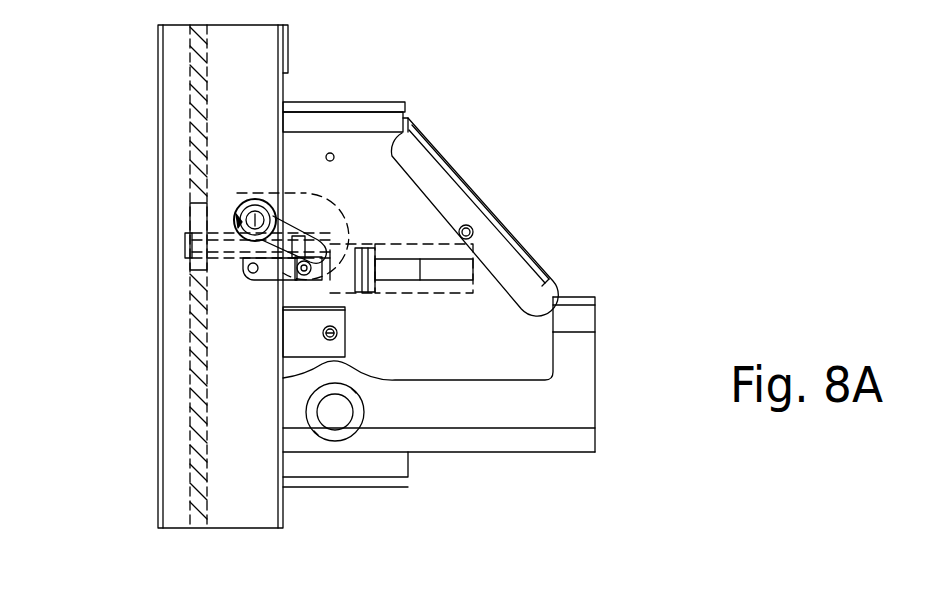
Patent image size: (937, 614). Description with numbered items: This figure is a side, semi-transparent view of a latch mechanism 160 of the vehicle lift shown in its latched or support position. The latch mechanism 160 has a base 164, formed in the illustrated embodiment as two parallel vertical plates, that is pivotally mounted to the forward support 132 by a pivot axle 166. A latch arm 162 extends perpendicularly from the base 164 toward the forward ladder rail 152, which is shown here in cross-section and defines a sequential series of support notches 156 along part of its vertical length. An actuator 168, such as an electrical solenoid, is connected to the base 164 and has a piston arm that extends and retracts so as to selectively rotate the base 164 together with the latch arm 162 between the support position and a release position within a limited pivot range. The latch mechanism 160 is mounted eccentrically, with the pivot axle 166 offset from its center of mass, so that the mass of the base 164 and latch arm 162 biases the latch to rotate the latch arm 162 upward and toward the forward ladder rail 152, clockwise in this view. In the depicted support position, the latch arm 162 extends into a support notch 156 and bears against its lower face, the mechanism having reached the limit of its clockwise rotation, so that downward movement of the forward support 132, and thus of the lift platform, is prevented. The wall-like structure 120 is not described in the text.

The wall 120 is at (173, 450).
The forward ladder rail 152 is at (200, 307).
The support notch 156 is at (197, 204).
The forward support 132 is at (372, 72).
The latch mechanism 160 is at (312, 200).
The latch arm 162 is at (185, 245).
The base 164 is at (326, 222).
The pivot axle 166 is at (253, 200).
The actuator 168 is at (437, 285).